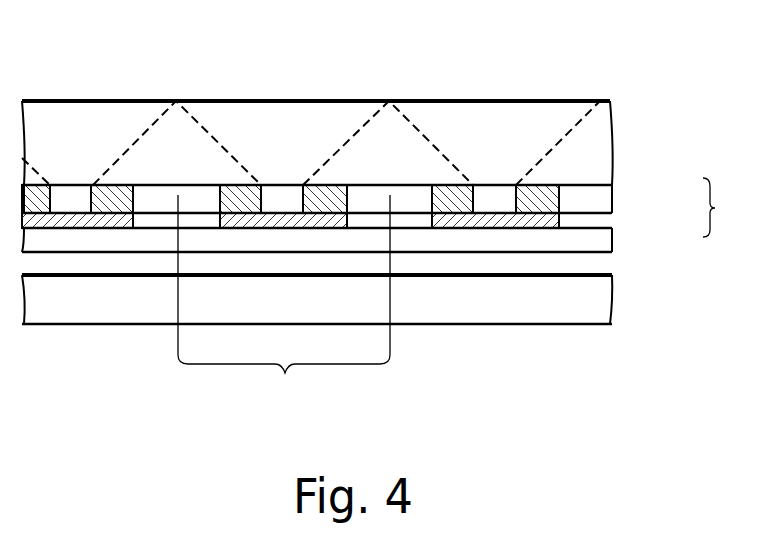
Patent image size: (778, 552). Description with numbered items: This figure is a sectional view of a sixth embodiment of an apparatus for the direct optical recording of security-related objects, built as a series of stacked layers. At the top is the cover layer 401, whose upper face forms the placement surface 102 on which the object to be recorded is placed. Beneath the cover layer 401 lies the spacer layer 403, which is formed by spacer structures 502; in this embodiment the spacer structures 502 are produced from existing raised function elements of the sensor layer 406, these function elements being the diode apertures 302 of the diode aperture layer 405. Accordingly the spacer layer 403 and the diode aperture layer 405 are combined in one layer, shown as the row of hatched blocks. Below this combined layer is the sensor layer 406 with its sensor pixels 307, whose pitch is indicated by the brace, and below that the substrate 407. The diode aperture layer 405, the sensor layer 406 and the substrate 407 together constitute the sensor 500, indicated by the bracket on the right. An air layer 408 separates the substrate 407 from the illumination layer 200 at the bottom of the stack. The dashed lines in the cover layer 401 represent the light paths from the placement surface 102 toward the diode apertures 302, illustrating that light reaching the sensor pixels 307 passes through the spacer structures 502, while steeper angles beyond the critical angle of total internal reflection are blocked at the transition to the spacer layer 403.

The placement surface 102 is at (491, 100).
The illumination layer 200 is at (577, 298).
The diode aperture 302 is at (290, 112).
The spacer structure 502 is at (232, 192).
The sensor pixel 307 is at (284, 302).
The cover layer 401 is at (587, 147).
The spacer layer 403 is at (393, 176).
The diode aperture layer 405 is at (577, 200).
The sensor layer 406 is at (577, 220).
The substrate 407 is at (577, 242).
The air layer 408 is at (577, 263).
The sensor 500 is at (739, 207).